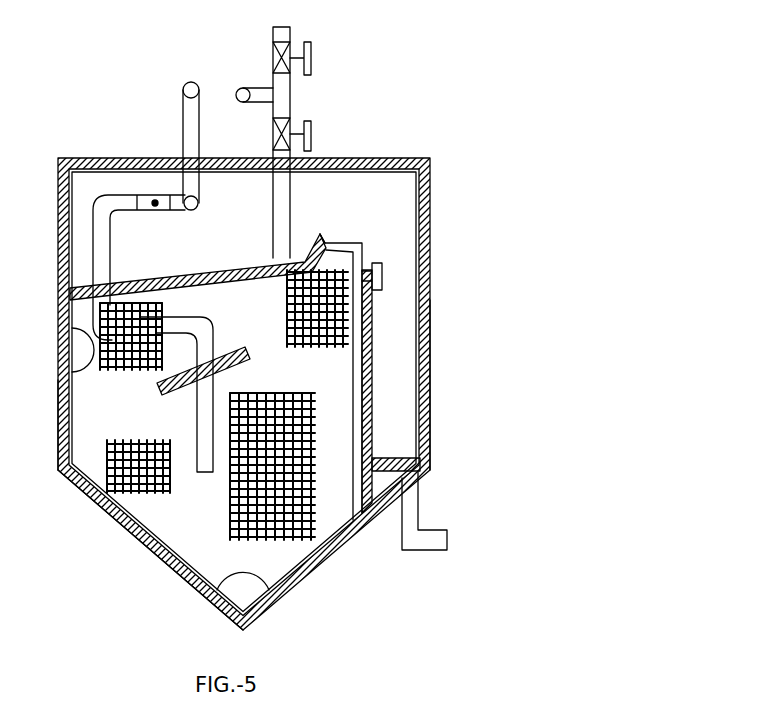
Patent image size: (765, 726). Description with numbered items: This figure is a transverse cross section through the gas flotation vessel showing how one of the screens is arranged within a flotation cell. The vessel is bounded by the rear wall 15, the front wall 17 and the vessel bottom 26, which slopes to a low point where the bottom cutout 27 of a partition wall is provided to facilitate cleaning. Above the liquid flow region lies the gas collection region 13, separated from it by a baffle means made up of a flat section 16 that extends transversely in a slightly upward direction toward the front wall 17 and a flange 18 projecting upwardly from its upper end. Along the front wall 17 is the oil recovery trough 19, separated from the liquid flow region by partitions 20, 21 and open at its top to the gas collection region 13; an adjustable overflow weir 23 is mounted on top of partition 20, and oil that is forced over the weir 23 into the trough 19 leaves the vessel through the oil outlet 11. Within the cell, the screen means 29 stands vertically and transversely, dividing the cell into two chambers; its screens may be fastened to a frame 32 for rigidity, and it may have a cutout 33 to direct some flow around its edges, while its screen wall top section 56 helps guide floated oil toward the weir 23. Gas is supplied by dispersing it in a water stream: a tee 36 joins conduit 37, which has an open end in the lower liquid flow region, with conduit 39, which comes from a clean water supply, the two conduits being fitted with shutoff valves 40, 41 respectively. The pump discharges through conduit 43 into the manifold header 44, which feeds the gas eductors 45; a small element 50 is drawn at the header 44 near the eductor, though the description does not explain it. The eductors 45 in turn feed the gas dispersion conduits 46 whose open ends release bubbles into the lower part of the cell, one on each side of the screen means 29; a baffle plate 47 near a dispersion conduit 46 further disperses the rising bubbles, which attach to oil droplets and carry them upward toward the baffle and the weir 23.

The oil outlet 11 is at (405, 550).
The gas collection region 13 is at (182, 254).
The rear wall 15 is at (58, 250).
The flat section 16 is at (158, 284).
The front wall 17 is at (430, 440).
The flange 18 is at (319, 240).
The oil recovery trough 19 is at (407, 363).
The partition 20 is at (373, 438).
The partition 21 is at (384, 458).
The adjustable overflow weir 23 is at (383, 278).
The vessel bottom 26 is at (160, 570).
The bottom cutout 27 is at (246, 574).
The screen means 29 is at (300, 486).
The frame 32 is at (66, 422).
The cutout 33 is at (84, 352).
The tee 36 is at (290, 110).
The conduit 37 is at (273, 206).
The conduit 39 is at (290, 34).
The shutoff valve 40 is at (311, 134).
The shutoff valve 41 is at (311, 58).
The conduit 43 is at (183, 128).
The manifold header 44 is at (196, 209).
The gas eductor 45 is at (142, 195).
The gas dispersion conduit 46 is at (228, 316).
The baffle plate 47 is at (256, 348).
The sensor 50 is at (155, 207).
The screen wall top section 56 is at (355, 243).